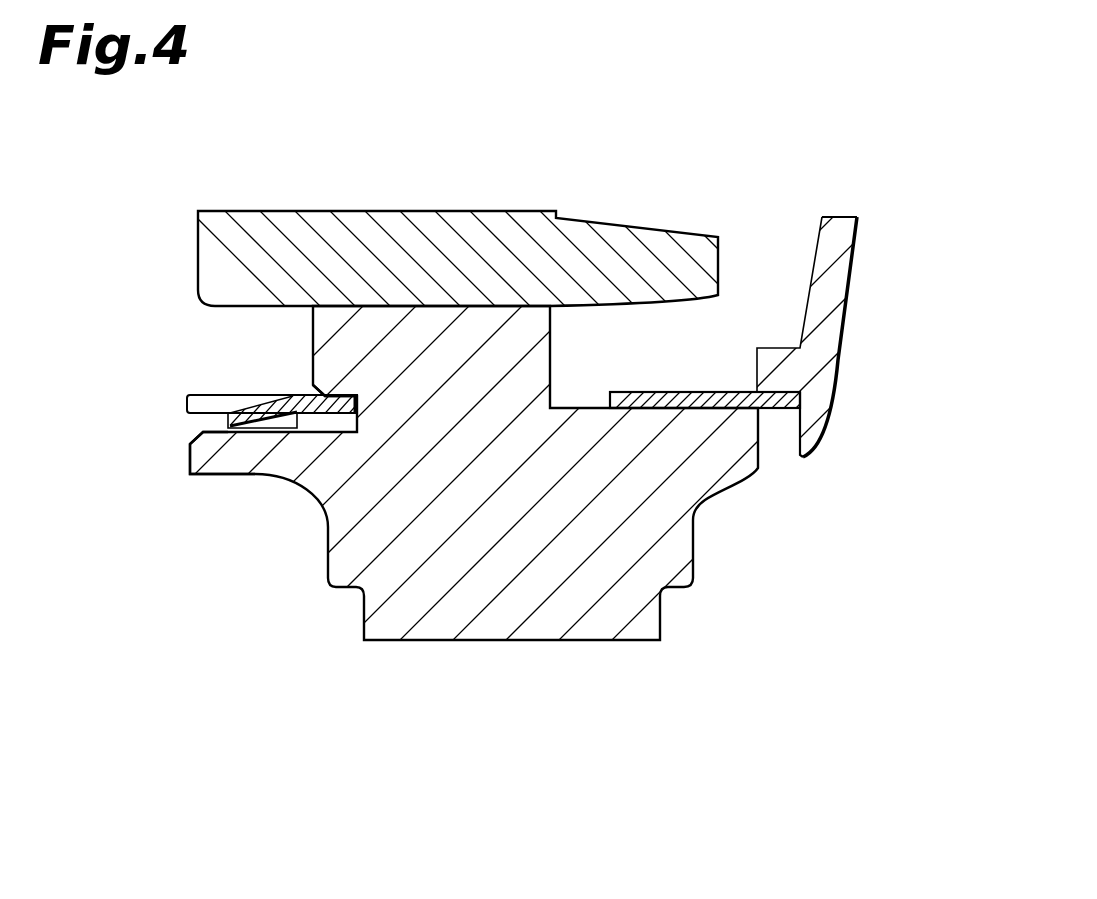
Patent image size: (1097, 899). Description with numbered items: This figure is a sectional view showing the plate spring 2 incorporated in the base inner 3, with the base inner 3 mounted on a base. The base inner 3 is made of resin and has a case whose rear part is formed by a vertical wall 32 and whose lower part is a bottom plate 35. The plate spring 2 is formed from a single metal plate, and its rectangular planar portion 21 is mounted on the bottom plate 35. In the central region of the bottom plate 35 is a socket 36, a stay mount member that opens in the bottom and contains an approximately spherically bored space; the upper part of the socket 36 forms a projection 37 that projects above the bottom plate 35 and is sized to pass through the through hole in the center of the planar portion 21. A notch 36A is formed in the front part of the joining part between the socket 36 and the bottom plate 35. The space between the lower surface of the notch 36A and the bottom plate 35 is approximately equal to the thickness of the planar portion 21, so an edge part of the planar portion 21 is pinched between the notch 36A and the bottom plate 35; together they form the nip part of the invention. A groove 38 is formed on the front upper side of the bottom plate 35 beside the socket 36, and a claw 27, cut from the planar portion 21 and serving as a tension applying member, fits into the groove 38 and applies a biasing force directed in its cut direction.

The plate spring 2 is at (677, 384).
The base inner 3 is at (765, 230).
The planar portion 21 is at (737, 403).
The claw 27 is at (229, 414).
The vertical wall 32 is at (828, 305).
The bottom plate 35 is at (236, 461).
The socket 36 is at (503, 612).
The notch 36A is at (313, 394).
The projection 37 is at (425, 250).
The groove 38 is at (272, 424).